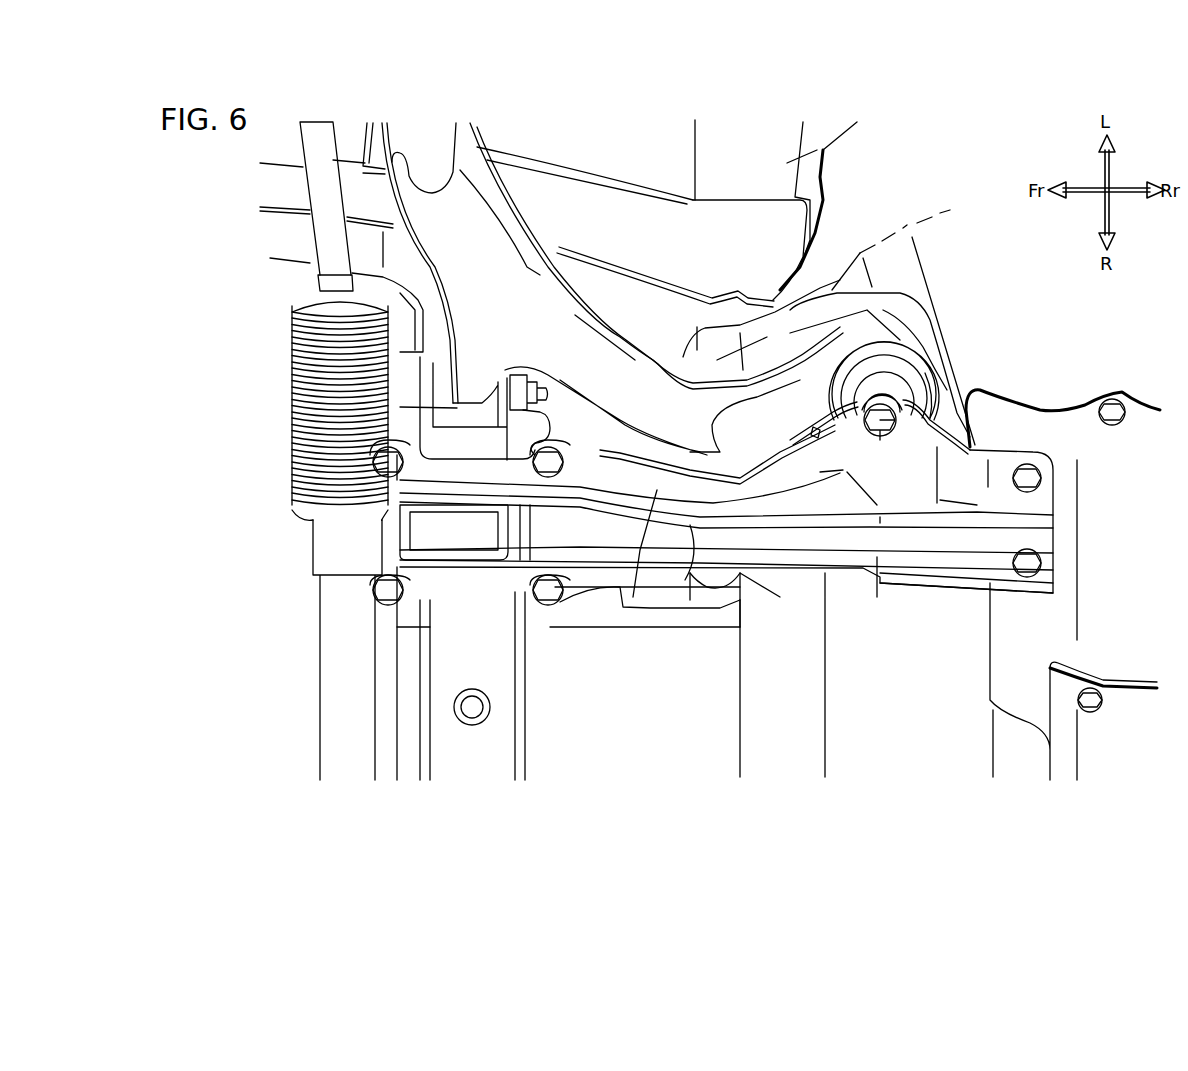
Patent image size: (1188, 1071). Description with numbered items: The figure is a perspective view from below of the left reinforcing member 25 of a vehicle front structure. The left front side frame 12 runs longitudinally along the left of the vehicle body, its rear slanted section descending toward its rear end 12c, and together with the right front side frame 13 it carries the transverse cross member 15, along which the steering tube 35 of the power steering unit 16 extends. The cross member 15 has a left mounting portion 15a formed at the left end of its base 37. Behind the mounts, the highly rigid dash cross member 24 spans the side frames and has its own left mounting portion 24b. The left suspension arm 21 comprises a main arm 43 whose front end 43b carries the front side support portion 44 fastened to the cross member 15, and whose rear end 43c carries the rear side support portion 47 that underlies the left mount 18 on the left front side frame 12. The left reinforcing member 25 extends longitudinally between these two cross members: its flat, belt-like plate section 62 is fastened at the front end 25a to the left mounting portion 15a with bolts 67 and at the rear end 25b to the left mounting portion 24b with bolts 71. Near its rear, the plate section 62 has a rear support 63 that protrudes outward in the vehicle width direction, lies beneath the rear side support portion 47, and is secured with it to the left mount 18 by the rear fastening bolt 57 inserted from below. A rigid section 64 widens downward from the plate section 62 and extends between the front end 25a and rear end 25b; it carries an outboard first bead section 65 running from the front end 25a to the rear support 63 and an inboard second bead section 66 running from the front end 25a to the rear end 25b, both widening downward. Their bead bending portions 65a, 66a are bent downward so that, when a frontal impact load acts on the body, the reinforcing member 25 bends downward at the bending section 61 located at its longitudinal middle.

The left front side frame 12 is at (743, 218).
The rear end 12c is at (1055, 385).
The right front side frame 13 is at (928, 717).
The cross member 15 is at (545, 755).
The left mounting portion 15a is at (447, 603).
The power steering unit 16 is at (318, 604).
The left mount 18 is at (898, 310).
The left suspension arm 21 is at (545, 233).
The dash cross member 24 is at (1100, 745).
The left mounting portion 24b is at (1067, 553).
The left reinforcing member 25 is at (650, 665).
The front end 25a is at (490, 545).
The rear end 25b is at (990, 565).
The steering tube 35 is at (343, 700).
The base 37 is at (455, 752).
The main arm 43 is at (597, 302).
The front end 43b is at (467, 385).
The rear end 43c is at (930, 383).
The front side support portion 44 is at (305, 418).
The rear side support portion 47 is at (895, 383).
The rear fastening bolt 57 is at (873, 440).
The bending section 61 is at (690, 525).
The plate section 62 is at (660, 487).
The rear support 63 is at (920, 432).
The rigid section 64 is at (522, 580).
The first bead section 65 is at (718, 520).
The bead bending portion 65a is at (688, 535).
The second bead section 66 is at (877, 557).
The bead bending portion 66a is at (740, 600).
The bolts 67 is at (303, 477).
The bolts 71 is at (1027, 485).